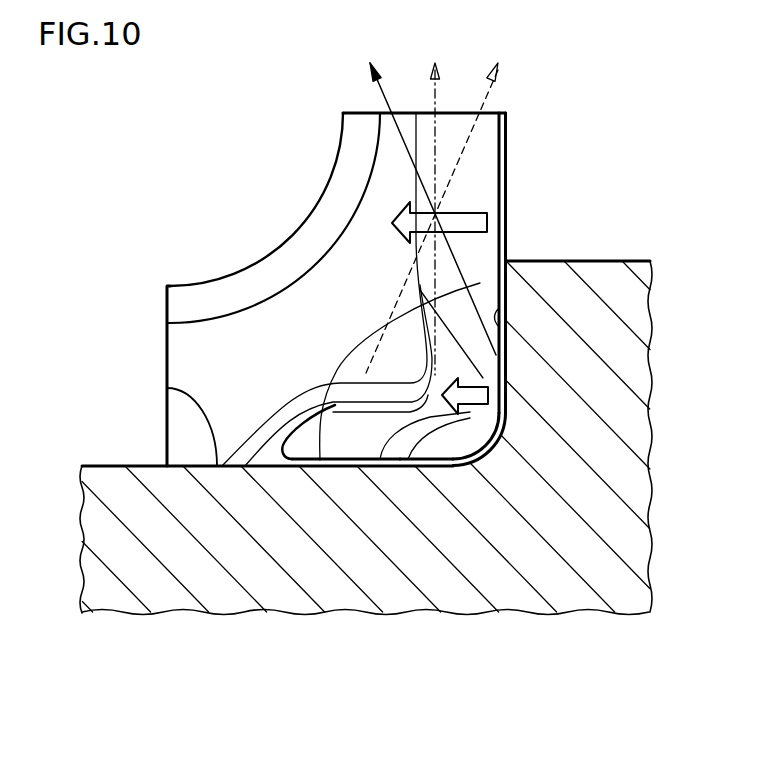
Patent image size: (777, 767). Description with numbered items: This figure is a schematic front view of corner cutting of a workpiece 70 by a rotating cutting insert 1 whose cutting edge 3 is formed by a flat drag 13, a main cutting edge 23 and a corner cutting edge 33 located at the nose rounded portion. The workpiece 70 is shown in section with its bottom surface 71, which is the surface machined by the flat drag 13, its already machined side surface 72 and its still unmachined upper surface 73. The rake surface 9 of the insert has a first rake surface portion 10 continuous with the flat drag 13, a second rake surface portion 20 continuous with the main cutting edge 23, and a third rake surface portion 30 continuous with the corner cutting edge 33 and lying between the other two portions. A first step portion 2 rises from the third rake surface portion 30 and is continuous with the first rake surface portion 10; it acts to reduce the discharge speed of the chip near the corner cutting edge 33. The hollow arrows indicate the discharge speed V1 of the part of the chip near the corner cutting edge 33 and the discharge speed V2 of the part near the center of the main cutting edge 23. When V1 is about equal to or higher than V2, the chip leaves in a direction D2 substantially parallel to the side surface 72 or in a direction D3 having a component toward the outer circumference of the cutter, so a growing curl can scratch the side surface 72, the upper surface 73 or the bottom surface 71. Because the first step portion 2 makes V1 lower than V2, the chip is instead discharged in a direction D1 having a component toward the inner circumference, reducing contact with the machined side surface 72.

The liquid ejection head 1 is at (345, 325).
The first step portion 2 is at (379, 440).
The cutting edge 3 is at (516, 480).
The rake surface 9 is at (352, 405).
The first rake surface portion 10 is at (335, 433).
The flat drag 13 is at (432, 468).
The second rake surface portion 20 is at (320, 460).
The main cutting edge 23 is at (497, 418).
The third rake surface portion 30 is at (410, 445).
The corner cutting edge 33 is at (458, 446).
The workpiece 70 is at (590, 416).
The bottom surface 71 is at (123, 466).
The side surface 72 is at (505, 318).
The upper surface 73 is at (595, 259).
The direction D1 is at (386, 93).
The direction D2 is at (437, 93).
The direction D3 is at (490, 95).
The discharge speed V1 is at (506, 410).
The discharge speed V2 is at (465, 210).